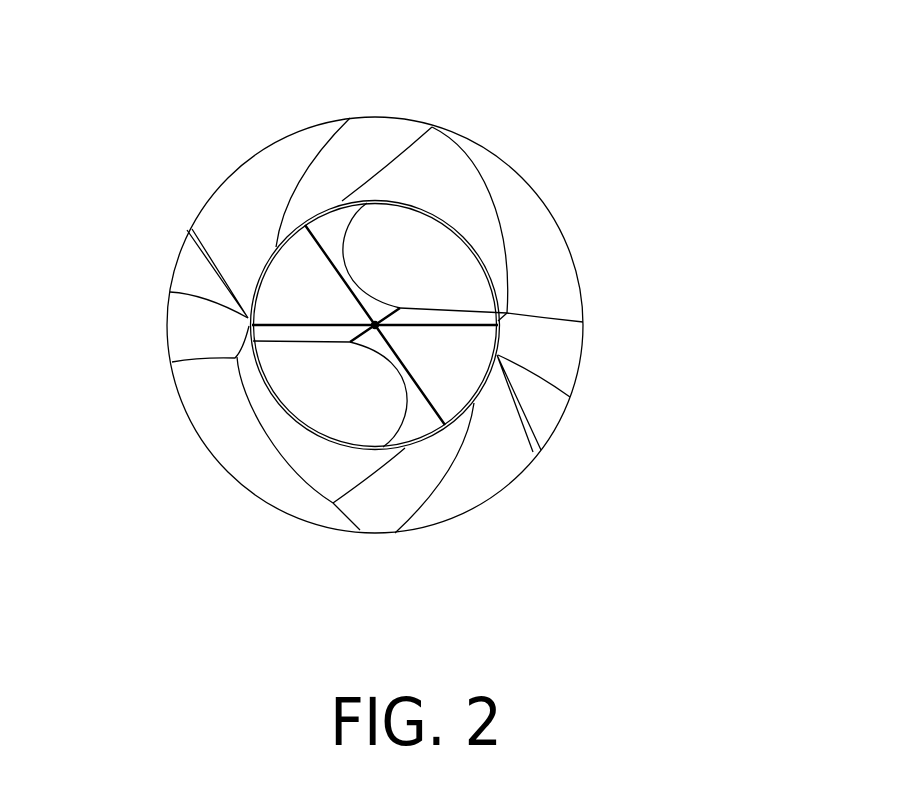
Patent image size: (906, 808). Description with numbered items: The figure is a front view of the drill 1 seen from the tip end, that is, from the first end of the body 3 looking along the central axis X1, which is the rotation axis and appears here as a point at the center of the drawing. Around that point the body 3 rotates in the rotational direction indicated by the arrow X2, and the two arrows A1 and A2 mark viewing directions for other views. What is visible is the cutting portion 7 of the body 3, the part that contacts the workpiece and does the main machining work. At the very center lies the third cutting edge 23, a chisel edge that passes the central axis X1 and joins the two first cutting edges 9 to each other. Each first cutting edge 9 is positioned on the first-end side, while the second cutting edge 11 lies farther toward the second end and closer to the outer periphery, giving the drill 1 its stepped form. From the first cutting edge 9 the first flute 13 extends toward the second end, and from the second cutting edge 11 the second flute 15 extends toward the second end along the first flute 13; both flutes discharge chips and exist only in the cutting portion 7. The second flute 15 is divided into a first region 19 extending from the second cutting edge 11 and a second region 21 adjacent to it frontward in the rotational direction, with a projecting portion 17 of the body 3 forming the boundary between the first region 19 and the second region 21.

The drill 1 is at (265, 95).
The body 3 is at (374, 295).
The cutting portion 7 is at (448, 130).
The first cutting edge 9 is at (448, 312).
The second cutting edge 11 is at (212, 265).
The first flute 13 is at (450, 193).
The second flute 15 is at (371, 342).
The projecting portion 17 is at (197, 297).
The first region 19 is at (188, 269).
The second region 21 is at (192, 335).
The third cutting edge 23 is at (373, 323).
The central axis X1 is at (375, 325).
The rotational direction X2 is at (518, 528).
The viewing direction A1 is at (382, 40).
The viewing direction A2 is at (748, 332).